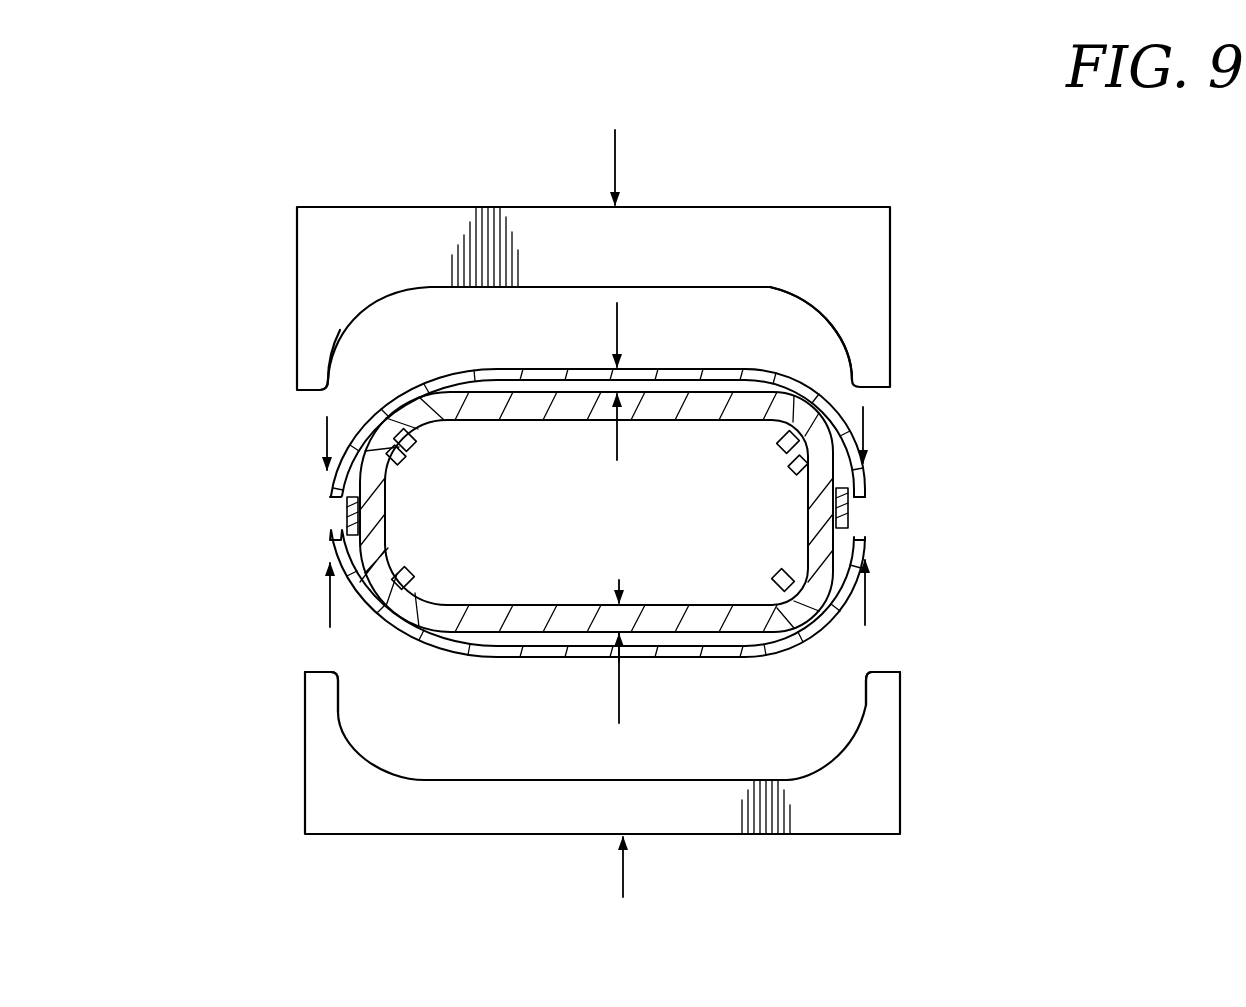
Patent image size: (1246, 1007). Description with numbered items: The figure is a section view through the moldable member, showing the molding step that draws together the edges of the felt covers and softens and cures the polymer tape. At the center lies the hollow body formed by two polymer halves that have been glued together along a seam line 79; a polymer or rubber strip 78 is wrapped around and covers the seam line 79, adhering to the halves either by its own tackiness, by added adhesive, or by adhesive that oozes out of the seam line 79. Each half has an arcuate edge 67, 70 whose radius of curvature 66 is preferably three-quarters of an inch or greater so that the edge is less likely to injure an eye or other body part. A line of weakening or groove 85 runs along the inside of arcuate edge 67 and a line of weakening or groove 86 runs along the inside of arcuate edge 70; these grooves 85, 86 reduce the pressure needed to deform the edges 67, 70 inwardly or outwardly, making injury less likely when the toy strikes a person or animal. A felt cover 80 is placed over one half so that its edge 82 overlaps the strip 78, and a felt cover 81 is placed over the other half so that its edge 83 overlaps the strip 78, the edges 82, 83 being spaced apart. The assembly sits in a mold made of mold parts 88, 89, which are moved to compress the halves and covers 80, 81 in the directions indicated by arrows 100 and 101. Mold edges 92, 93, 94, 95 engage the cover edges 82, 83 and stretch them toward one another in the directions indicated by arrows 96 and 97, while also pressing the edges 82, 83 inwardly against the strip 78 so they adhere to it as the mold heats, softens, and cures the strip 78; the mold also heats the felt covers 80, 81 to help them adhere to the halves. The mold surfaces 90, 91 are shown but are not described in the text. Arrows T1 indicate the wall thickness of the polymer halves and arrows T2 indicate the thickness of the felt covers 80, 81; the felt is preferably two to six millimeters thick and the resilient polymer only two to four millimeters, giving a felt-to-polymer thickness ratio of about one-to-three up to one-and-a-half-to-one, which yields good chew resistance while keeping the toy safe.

The radius of curvature 66 is at (407, 443).
The arcuate edge 67 is at (792, 470).
The arcuate edge 70 is at (445, 565).
The polymer strip 78 is at (348, 508).
The seam line 79 is at (398, 521).
The felt cover 80 is at (546, 360).
The felt cover 81 is at (576, 656).
The edge of felt cover 82 is at (866, 498).
The edge of felt cover 83 is at (855, 513).
The line of weakening or groove 85 is at (399, 460).
The line of weakening or groove 86 is at (415, 583).
The mold part 88 is at (912, 284).
The mold part 89 is at (920, 768).
The upper die pressing surface 90 is at (772, 287).
The lower die pressing surface 91 is at (556, 782).
The mold edge 92 is at (325, 672).
The mold edge 93 is at (343, 380).
The mold edge 94 is at (828, 340).
The mold edge 95 is at (860, 670).
The arrow 96 is at (326, 600).
The arrow 97 is at (878, 612).
The arrow 100 is at (624, 880).
The arrow 101 is at (616, 165).
The wall thickness of halves T1 is at (618, 345).
The felt cover thickness T2 is at (620, 685).